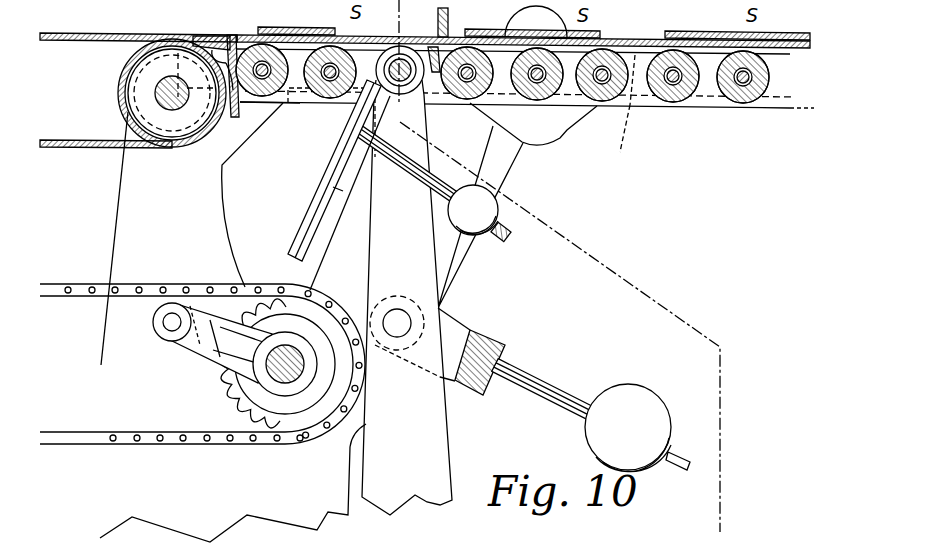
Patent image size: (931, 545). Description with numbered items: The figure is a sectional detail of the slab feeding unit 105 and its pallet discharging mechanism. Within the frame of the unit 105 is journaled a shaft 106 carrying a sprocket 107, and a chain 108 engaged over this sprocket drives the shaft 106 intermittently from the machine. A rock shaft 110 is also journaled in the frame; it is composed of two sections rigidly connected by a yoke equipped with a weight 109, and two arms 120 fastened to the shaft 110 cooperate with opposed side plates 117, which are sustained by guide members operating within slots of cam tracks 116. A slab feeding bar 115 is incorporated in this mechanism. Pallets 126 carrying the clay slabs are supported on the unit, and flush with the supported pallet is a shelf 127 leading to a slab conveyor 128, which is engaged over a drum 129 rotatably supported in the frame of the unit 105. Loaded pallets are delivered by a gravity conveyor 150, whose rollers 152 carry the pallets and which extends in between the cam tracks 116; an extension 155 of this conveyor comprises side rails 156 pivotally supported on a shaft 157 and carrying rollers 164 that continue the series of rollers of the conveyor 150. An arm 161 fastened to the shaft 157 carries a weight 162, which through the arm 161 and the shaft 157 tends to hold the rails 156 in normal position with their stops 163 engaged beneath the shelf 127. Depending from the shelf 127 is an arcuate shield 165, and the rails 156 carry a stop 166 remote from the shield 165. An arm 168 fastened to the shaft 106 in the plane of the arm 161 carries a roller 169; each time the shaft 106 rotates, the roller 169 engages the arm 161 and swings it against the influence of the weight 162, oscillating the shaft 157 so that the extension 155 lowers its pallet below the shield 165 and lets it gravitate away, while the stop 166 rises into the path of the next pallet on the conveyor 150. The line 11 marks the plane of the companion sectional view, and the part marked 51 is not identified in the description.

The slab conveyor 128 is at (110, 24).
The drum 129 is at (119, 95).
The shelf 127 is at (215, 37).
The stops 163 is at (232, 35).
The pallets 126 is at (255, 36).
The rollers 164 is at (306, 31).
The section line 11- 11 is at (391, 13).
The slab feeding bar 115 is at (449, 13).
The arcuate shield 165 is at (230, 120).
The side rails 156 is at (300, 104).
The gravity conveyor extension 155 is at (336, 105).
The stop 166 is at (416, 92).
The shaft 157 is at (428, 130).
The rollers 152 is at (500, 106).
The side plates 117 is at (558, 134).
The hidden member 51 is at (636, 108).
The cam tracks 116 is at (625, 139).
The gravity conveyor 150 is at (784, 111).
The arms 120 is at (506, 169).
The arm 161 is at (322, 178).
The weight 162 is at (488, 232).
The slab feeding unit 105 is at (142, 230).
The rock shaft 110 is at (400, 322).
The roller 169 is at (160, 333).
The arm 168 is at (192, 344).
The sprocket 107 is at (224, 410).
The shaft 106 is at (291, 382).
The chain 108 is at (178, 447).
The weight 109 is at (532, 390).